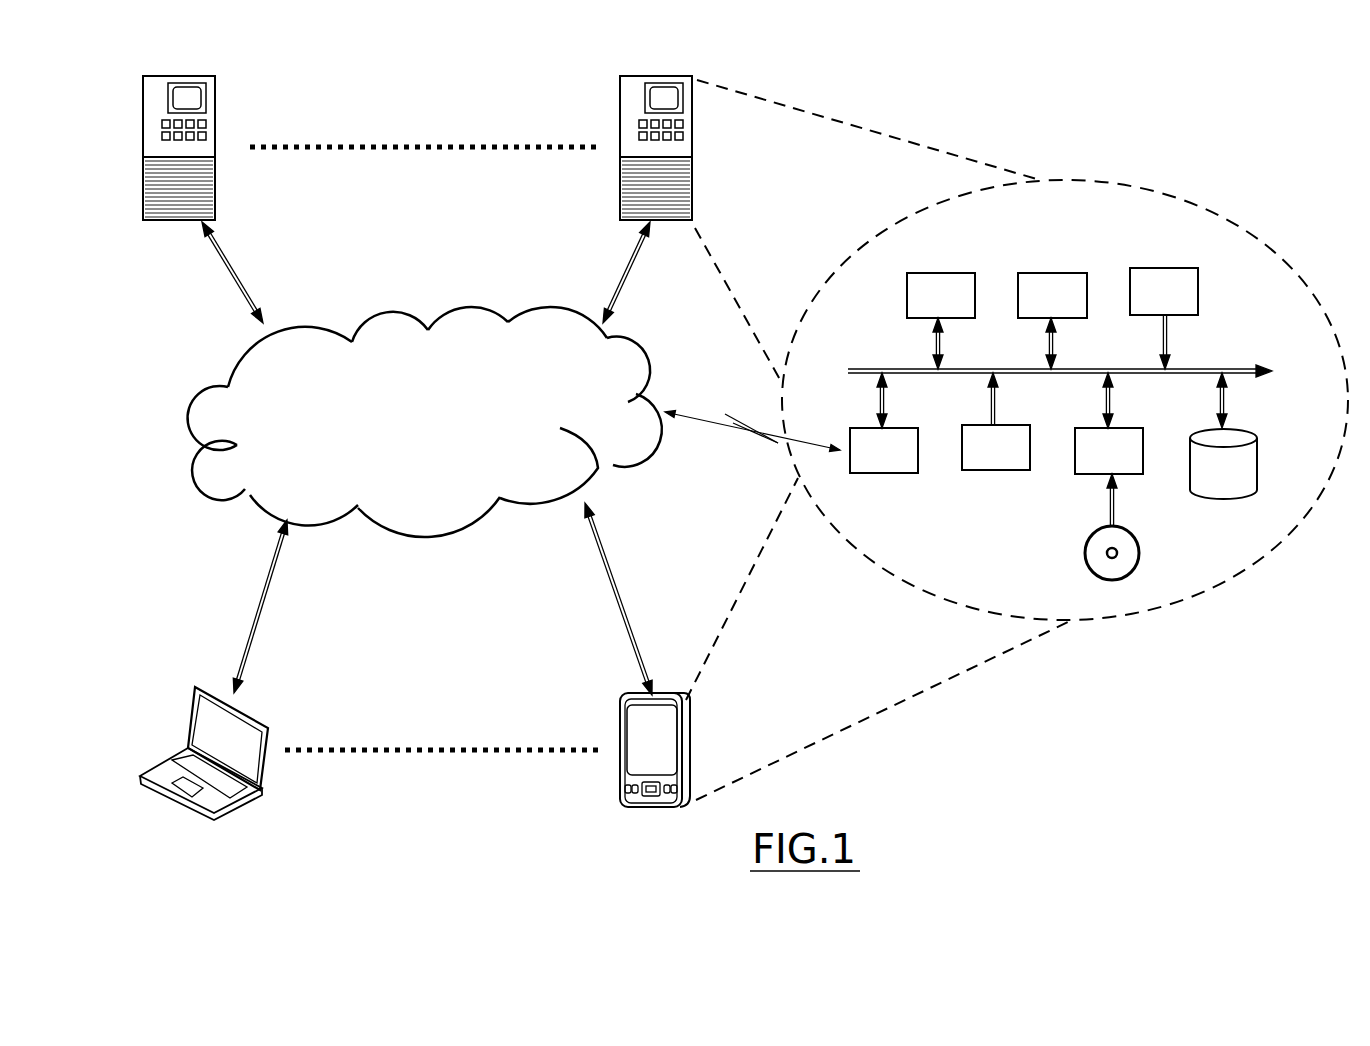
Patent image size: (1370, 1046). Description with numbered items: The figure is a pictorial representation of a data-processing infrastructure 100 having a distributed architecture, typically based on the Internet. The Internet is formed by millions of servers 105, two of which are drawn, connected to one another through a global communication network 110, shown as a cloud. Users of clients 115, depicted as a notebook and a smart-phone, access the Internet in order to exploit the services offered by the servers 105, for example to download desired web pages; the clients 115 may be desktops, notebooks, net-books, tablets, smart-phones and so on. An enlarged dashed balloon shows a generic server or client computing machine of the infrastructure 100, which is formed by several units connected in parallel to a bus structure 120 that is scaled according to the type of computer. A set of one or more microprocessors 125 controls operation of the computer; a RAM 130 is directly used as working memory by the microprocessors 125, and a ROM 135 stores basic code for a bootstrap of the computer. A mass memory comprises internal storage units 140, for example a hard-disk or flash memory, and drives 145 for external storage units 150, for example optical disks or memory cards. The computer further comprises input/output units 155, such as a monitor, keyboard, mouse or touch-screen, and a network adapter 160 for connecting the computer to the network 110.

The data-processing infrastructure 100 is at (1065, 338).
The server 105 is at (473, 152).
The global communication network 110 is at (457, 422).
The client 115 is at (465, 745).
The bus structure 120 is at (1064, 354).
The microprocessor 125 is at (973, 300).
The RAM 130 is at (1082, 300).
The ROM 135 is at (1193, 298).
The internal storage unit 140 is at (1248, 452).
The drive 145 is at (1143, 451).
The external storage unit 150 is at (1067, 527).
The input/output unit 155 is at (1012, 441).
The network adapter 160 is at (907, 442).